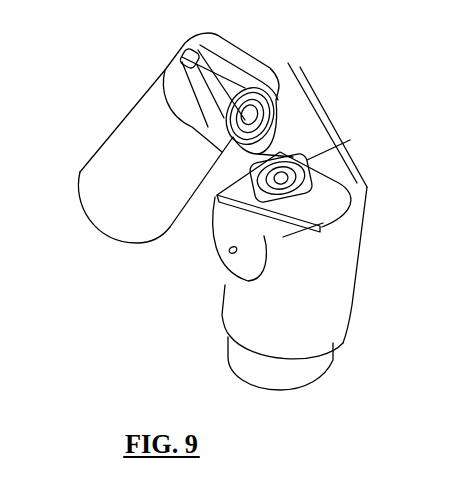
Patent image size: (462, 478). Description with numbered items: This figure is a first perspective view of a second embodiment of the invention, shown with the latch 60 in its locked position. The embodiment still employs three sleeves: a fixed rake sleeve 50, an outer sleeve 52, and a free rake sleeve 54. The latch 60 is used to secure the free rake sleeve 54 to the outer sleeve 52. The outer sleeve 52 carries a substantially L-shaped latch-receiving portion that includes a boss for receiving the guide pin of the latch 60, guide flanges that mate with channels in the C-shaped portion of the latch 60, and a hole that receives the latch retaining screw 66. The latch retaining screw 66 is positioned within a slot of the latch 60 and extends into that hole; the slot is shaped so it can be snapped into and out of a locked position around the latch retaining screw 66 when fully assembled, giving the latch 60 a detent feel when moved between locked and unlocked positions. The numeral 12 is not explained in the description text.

The pivot pin 12 is at (252, 110).
The fixed rake sleeve 50 is at (98, 143).
The outer sleeve 52 is at (350, 278).
The free rake sleeve 54 is at (307, 385).
The latch 60 is at (212, 251).
The latch retaining screw 66 is at (283, 177).